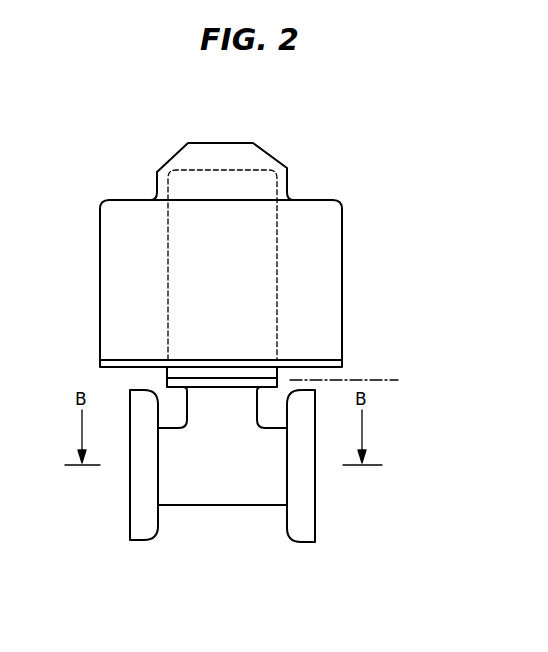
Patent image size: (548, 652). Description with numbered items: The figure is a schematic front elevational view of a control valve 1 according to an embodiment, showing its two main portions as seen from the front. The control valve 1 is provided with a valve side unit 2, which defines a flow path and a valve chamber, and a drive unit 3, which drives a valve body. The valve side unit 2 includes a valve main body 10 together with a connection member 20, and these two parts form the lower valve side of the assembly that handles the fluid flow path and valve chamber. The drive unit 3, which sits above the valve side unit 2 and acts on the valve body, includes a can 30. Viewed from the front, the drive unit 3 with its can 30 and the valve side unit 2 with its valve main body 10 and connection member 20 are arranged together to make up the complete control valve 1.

The control valve 1 is at (110, 141).
The valve side unit 2 is at (380, 381).
The drive unit 3 is at (380, 137).
The valve main body 10 is at (217, 497).
The connection member 20 is at (142, 530).
The can 30 is at (278, 228).